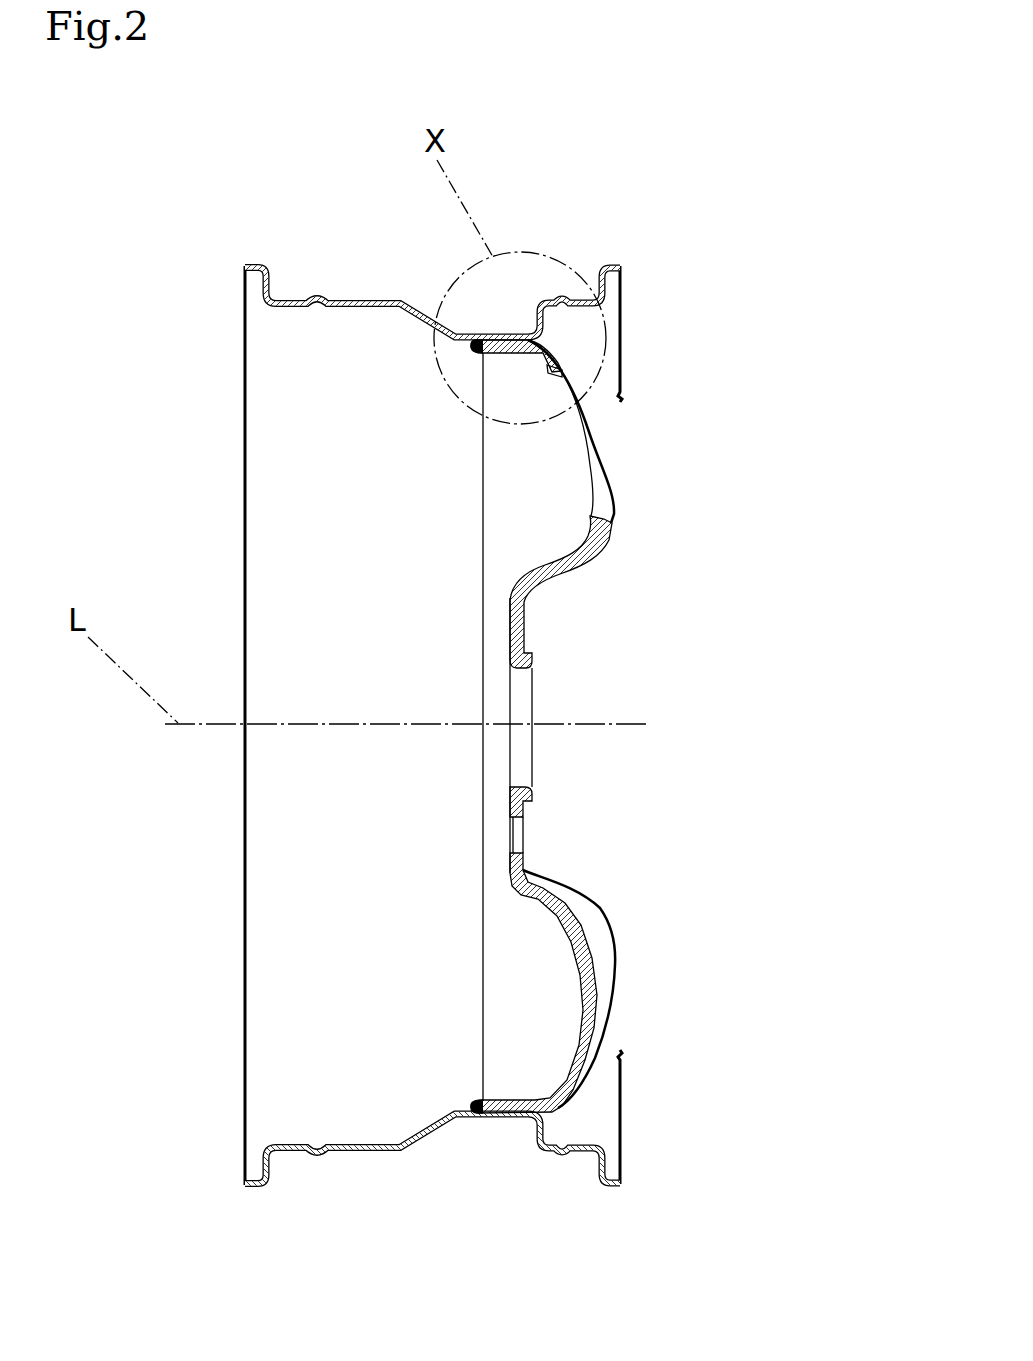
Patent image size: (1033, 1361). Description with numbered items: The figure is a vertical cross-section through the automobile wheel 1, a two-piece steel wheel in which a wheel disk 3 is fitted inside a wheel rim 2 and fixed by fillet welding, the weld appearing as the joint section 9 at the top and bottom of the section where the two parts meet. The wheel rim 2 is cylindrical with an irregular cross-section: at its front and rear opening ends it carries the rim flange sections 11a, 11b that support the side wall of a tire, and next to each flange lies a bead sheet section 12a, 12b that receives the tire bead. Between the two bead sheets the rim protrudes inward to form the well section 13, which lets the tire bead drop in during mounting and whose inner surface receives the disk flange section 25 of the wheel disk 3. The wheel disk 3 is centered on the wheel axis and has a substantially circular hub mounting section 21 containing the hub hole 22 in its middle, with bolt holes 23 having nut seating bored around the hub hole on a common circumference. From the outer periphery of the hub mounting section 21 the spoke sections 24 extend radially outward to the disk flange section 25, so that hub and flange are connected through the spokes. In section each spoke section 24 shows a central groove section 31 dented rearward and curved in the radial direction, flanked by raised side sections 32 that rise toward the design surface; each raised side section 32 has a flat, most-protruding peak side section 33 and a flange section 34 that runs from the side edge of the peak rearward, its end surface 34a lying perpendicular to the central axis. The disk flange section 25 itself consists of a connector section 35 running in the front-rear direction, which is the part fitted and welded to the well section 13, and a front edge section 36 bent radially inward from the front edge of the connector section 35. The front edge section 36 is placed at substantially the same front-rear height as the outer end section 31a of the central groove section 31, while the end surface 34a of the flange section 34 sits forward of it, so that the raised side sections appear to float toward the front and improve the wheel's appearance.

The automobile wheel 1 is at (700, 237).
The wheel rim 2 is at (387, 300).
The wheel disk 3 is at (592, 565).
The joint section 9 is at (470, 345).
The front rim flange section 11a is at (610, 1187).
The rear rim flange section 11b is at (245, 1188).
The front bead sheet section 12a is at (567, 1153).
The rear bead sheet section 12b is at (290, 1152).
The well section 13 is at (497, 1120).
The hub mounting section 21 is at (510, 627).
The hub hole 22 is at (522, 702).
The bolt hole 23 is at (523, 840).
The spoke section 24 is at (610, 448).
The disk flange section 25 is at (500, 457).
The central groove section 31 is at (580, 1020).
The outer end section of central groove section 31a is at (568, 1100).
The raised side section 32 is at (600, 897).
The peak side section 33 is at (613, 523).
The flange section 34 is at (603, 497).
The end surface of flange section 34a is at (590, 518).
The connector section 35 is at (487, 353).
The front edge section 36 is at (560, 360).